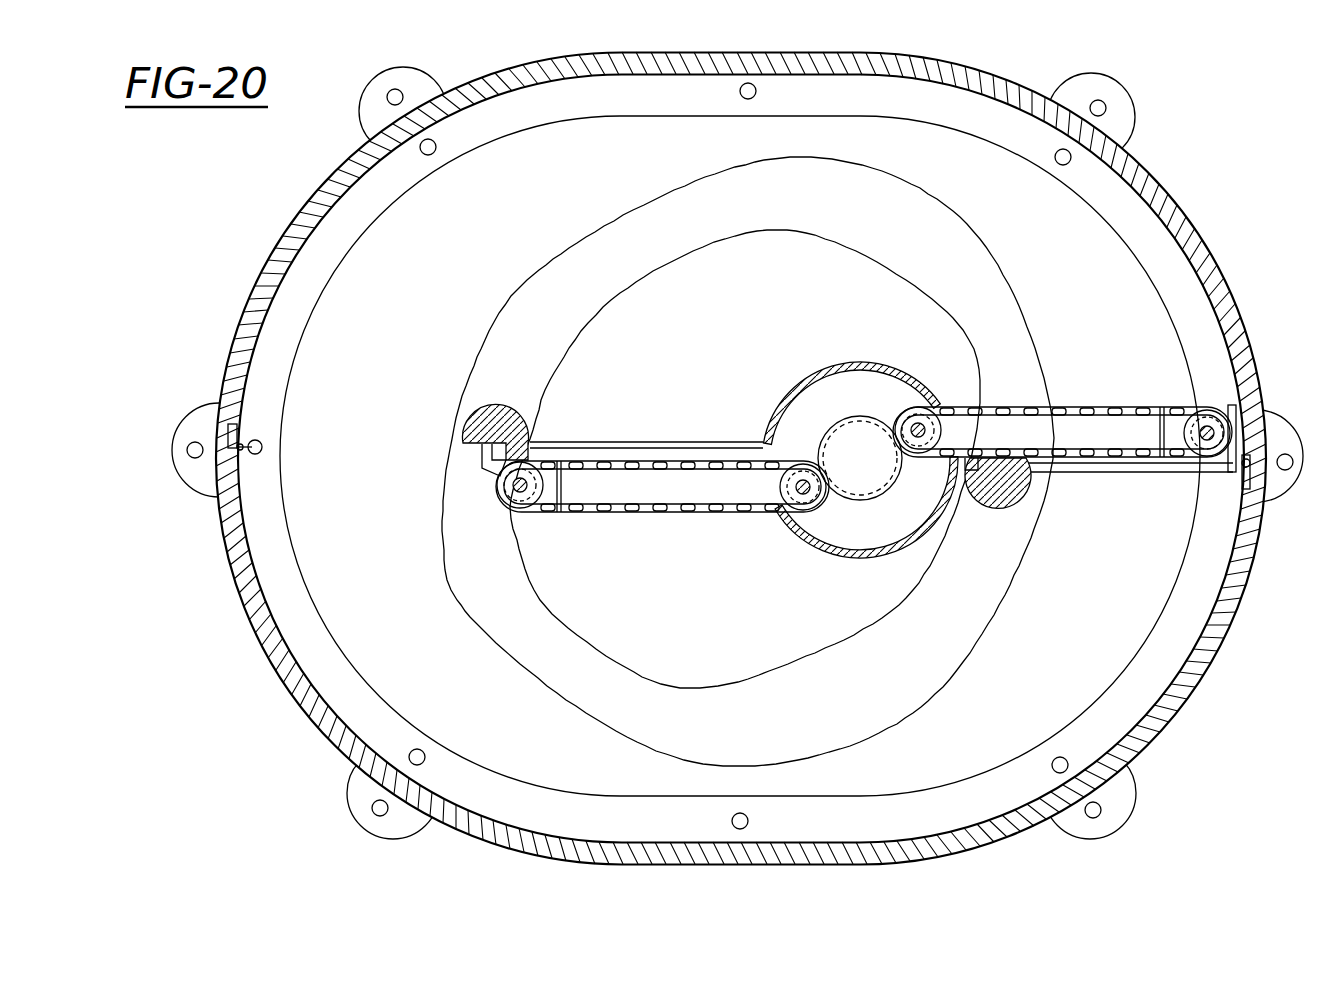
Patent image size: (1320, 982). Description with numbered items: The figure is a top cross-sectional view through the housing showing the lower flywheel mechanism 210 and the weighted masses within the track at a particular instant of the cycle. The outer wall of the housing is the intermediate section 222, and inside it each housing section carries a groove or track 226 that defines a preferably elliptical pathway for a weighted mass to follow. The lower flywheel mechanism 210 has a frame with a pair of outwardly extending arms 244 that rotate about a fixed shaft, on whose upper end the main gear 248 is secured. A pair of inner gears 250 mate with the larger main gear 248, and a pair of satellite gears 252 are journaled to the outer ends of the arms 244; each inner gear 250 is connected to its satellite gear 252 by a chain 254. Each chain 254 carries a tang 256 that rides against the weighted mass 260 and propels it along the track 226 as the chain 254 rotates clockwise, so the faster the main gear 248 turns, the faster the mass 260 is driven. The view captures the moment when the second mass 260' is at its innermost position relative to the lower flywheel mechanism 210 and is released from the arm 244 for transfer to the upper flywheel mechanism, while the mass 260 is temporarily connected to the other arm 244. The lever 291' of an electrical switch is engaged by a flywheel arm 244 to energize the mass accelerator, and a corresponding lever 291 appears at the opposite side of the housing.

The lower flywheel mechanism 210 is at (806, 358).
The intermediate section 222 is at (528, 74).
The track 226 is at (566, 276).
The arm 244 is at (660, 488).
The main gear 248 is at (882, 480).
The inner gear 250 is at (792, 513).
The satellite gear 252 is at (517, 503).
The chain 254 is at (552, 511).
The tang 256 is at (500, 472).
The weighted mass 260 is at (468, 403).
The weighted mass 260' is at (1020, 530).
The latch 291 is at (1274, 512).
The lever 291' is at (197, 399).